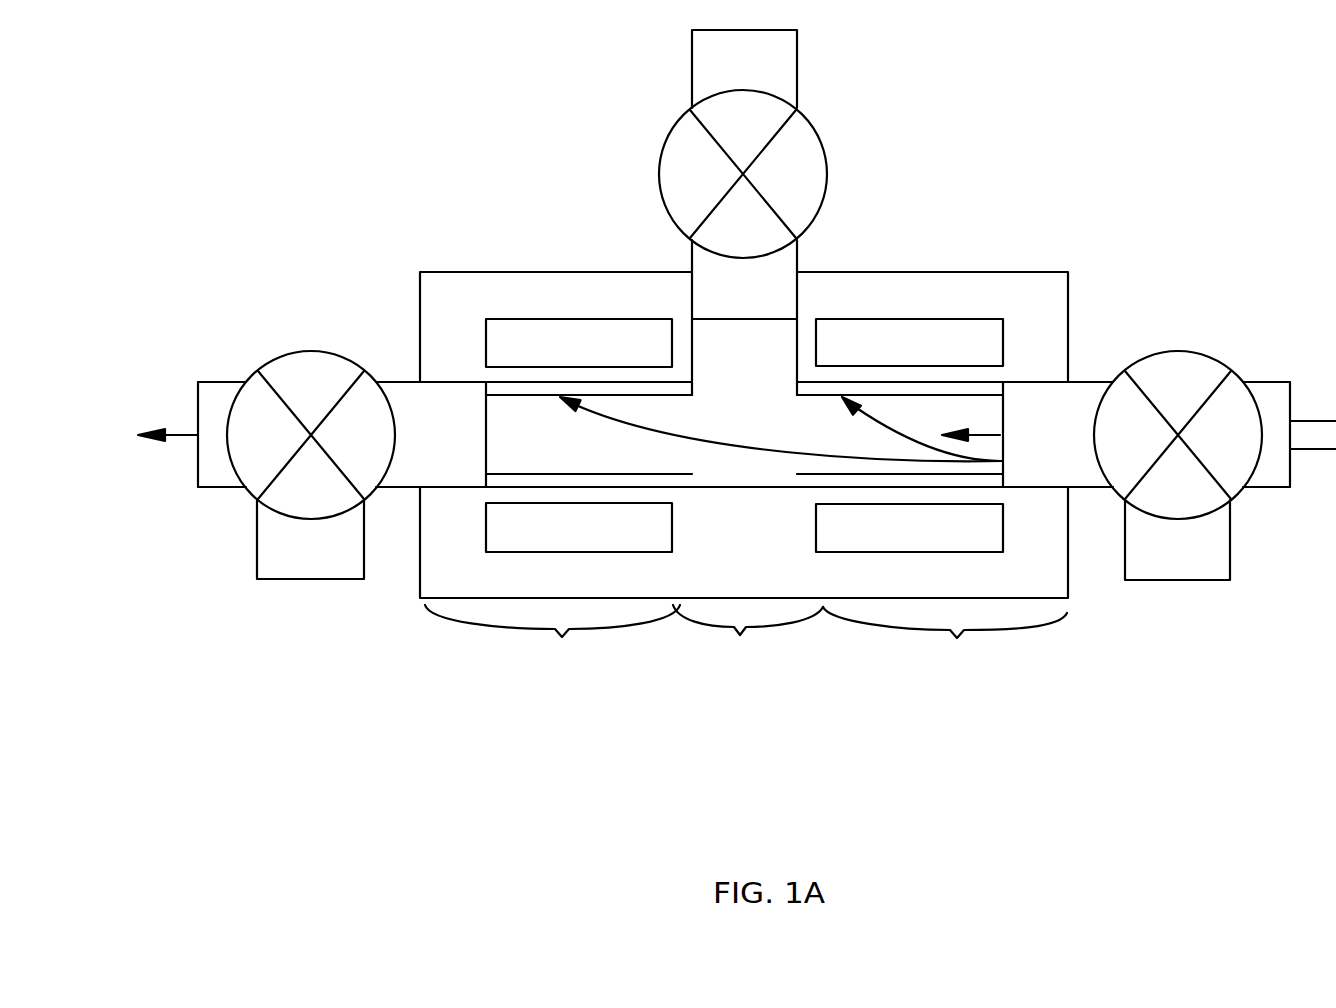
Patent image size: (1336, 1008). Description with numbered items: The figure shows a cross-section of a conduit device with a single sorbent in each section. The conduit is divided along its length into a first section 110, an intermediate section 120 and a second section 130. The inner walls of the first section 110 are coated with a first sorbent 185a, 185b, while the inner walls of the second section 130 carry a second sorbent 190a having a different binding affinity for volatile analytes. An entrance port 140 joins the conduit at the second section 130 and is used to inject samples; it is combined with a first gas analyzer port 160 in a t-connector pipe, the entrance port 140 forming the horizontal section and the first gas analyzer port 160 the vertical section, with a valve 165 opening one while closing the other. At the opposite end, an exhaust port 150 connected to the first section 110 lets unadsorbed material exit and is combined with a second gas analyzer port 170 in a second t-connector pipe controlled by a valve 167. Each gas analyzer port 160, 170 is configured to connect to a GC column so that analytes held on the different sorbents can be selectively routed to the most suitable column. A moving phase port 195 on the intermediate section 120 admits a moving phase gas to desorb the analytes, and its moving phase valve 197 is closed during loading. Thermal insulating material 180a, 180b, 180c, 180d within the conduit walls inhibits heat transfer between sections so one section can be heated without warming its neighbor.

The first section 110 is at (552, 638).
The intermediate section 120 is at (748, 639).
The second section 130 is at (945, 642).
The entrance port 140 is at (1091, 382).
The exhaust port 150 is at (403, 380).
The first gas analyzer port 160 is at (1232, 545).
The entrance port valve 165 is at (1203, 350).
The valve 167 is at (305, 348).
The second gas analyzer port 170 is at (333, 580).
The thermal insulating material 180a is at (544, 356).
The thermal insulating material 180b is at (871, 356).
The thermal insulating material 180c is at (543, 541).
The thermal insulating material 180d is at (861, 542).
The first sorbent 185a is at (522, 397).
The first sorbent 185b is at (607, 473).
The second sorbent 190a is at (813, 397).
The moving phase port 195 is at (692, 252).
The moving phase valve 197 is at (823, 143).